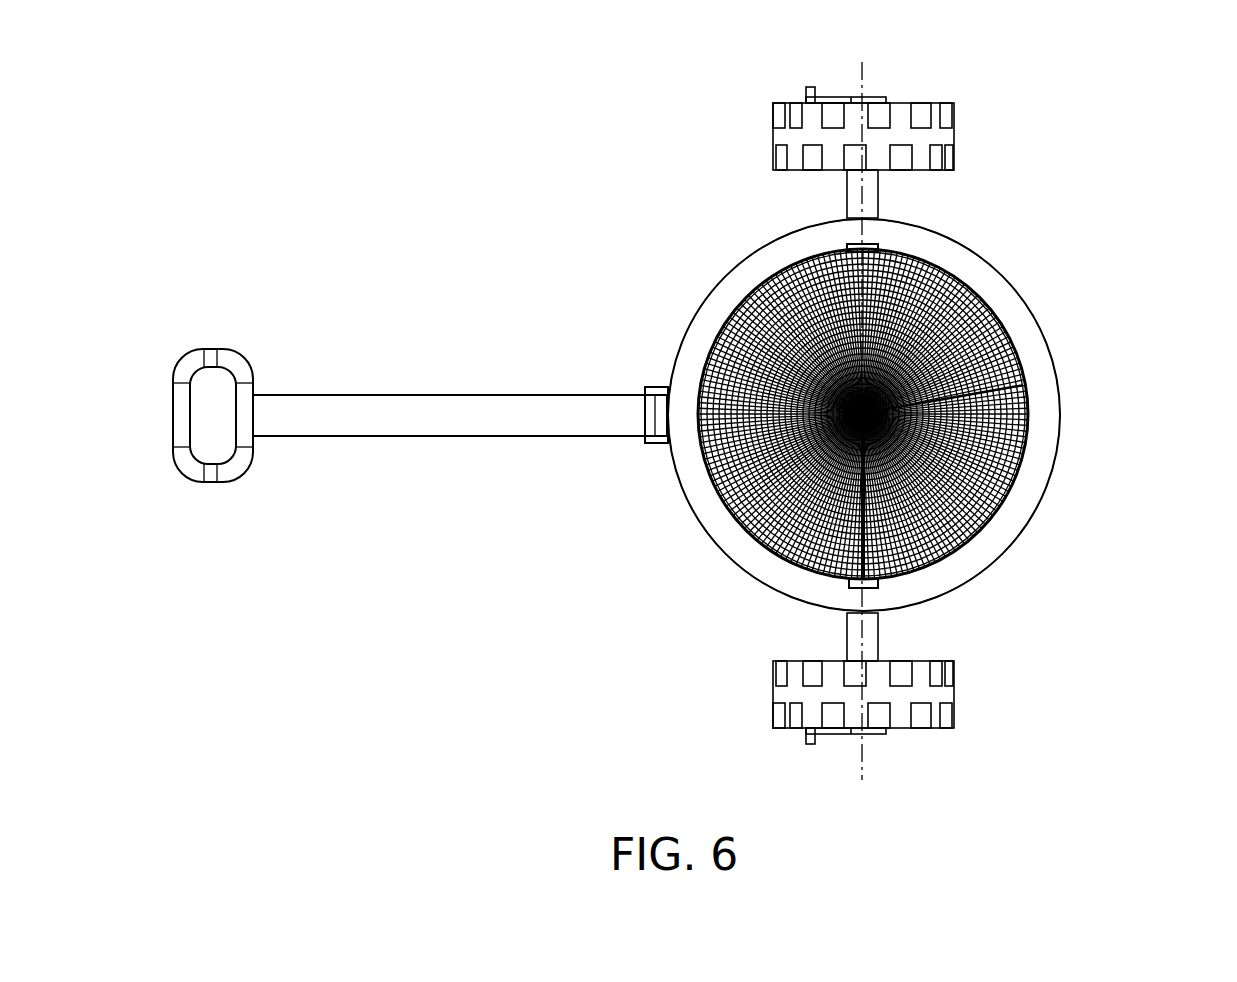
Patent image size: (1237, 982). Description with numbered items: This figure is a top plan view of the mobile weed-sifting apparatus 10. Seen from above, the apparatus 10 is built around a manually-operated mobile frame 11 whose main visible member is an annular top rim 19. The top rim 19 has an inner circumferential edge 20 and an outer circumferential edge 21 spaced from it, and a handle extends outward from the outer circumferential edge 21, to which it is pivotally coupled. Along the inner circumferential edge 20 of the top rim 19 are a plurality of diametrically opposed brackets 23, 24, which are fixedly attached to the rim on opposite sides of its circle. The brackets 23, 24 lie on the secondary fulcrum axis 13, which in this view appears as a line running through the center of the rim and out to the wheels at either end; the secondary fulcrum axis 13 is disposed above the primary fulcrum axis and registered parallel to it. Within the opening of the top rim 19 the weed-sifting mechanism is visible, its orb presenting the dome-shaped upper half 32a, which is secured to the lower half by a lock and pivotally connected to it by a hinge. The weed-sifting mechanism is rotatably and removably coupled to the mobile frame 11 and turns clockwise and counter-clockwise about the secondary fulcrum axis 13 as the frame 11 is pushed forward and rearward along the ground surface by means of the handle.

The mobile weed-sifting apparatus 10 is at (530, 181).
The mobile frame 11 is at (1006, 250).
The secondary fulcrum axis 13 is at (860, 88).
The annular top rim 19 is at (1022, 515).
The inner circumferential edge 20 is at (710, 367).
The outer circumferential edge 21 is at (700, 307).
The bracket 23 is at (862, 243).
The bracket 24 is at (857, 588).
The dome-shaped upper half 32a is at (1023, 385).